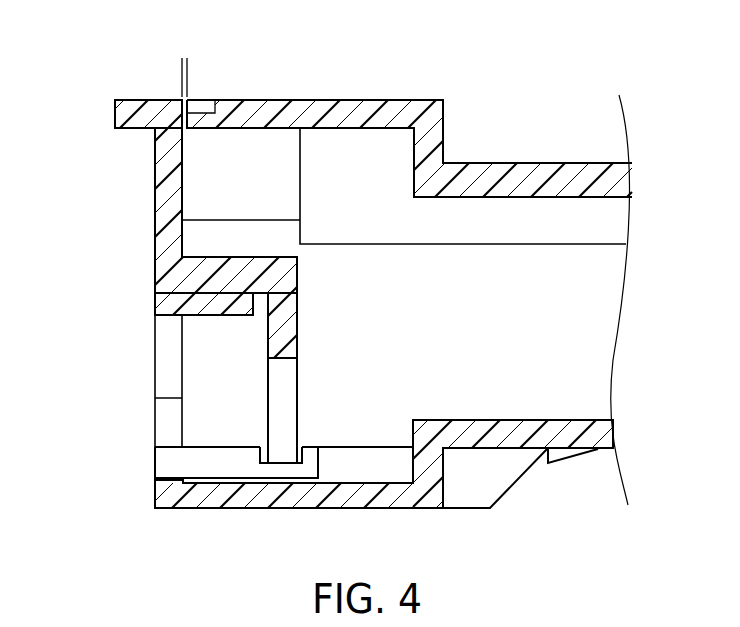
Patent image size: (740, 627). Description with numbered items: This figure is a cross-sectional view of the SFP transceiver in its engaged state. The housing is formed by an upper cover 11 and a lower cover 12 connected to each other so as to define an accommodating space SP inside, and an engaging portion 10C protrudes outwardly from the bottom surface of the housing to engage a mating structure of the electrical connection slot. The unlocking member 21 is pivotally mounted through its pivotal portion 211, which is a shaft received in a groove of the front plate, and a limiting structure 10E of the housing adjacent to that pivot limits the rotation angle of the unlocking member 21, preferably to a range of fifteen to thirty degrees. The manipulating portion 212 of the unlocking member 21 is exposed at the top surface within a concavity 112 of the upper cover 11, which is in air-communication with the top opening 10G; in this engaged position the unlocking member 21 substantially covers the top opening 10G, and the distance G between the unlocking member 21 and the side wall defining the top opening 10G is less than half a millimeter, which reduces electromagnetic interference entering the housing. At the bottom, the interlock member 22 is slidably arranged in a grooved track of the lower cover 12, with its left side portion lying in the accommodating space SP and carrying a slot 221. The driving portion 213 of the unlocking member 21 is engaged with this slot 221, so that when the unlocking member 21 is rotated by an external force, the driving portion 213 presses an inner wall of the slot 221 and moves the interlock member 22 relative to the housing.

The upper cover 11 is at (330, 113).
The concavity 112 is at (198, 108).
The distance G is at (226, 68).
The top opening 10G is at (188, 136).
The unlocking member 21 is at (143, 216).
The manipulating portion 212 is at (147, 110).
The pivotal portion 211 is at (240, 292).
The limiting structure 10E is at (203, 308).
The driving portion 213 is at (286, 403).
The slot 221 is at (265, 453).
The interlock member 22 is at (168, 462).
The lower cover 12 is at (282, 501).
The engaging portion 10C is at (568, 455).
The accommodating space SP is at (583, 333).